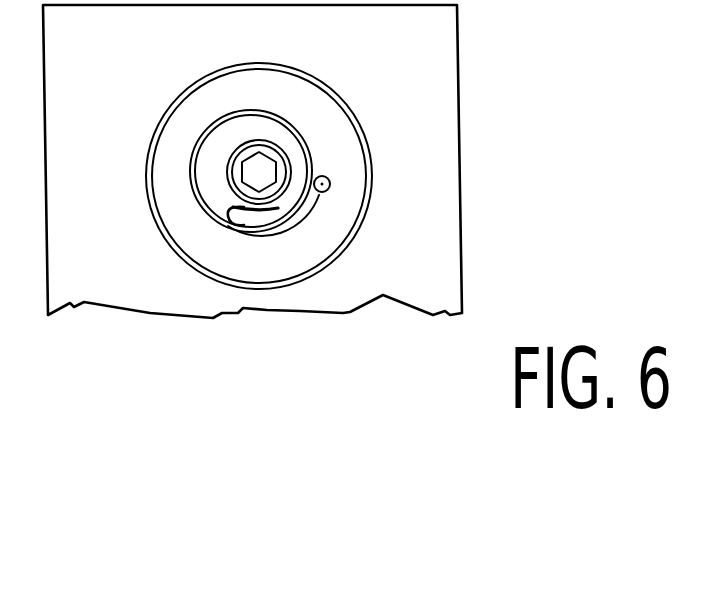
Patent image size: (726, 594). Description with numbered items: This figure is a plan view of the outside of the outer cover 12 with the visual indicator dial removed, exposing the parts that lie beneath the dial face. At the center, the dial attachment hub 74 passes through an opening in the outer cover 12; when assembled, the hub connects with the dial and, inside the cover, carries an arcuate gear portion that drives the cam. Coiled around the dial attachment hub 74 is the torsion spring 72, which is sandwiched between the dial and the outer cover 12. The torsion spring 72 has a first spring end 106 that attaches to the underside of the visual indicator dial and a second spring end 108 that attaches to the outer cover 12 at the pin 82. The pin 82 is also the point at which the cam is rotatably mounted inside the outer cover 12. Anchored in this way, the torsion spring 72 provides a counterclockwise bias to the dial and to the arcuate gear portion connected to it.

The outer cover 12 is at (460, 32).
The torsion spring 72 is at (298, 132).
The dial attachment hub 74 is at (263, 166).
The pin 82 is at (323, 184).
The first spring end 106 is at (222, 203).
The second spring end 108 is at (318, 197).